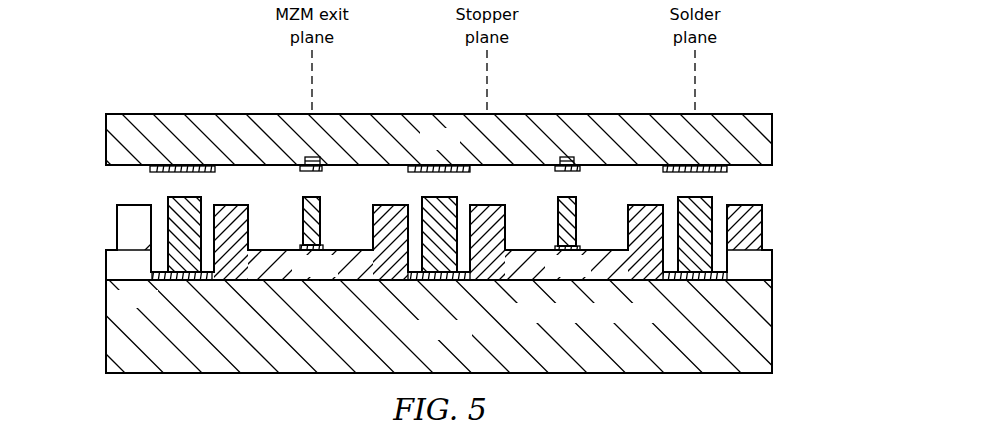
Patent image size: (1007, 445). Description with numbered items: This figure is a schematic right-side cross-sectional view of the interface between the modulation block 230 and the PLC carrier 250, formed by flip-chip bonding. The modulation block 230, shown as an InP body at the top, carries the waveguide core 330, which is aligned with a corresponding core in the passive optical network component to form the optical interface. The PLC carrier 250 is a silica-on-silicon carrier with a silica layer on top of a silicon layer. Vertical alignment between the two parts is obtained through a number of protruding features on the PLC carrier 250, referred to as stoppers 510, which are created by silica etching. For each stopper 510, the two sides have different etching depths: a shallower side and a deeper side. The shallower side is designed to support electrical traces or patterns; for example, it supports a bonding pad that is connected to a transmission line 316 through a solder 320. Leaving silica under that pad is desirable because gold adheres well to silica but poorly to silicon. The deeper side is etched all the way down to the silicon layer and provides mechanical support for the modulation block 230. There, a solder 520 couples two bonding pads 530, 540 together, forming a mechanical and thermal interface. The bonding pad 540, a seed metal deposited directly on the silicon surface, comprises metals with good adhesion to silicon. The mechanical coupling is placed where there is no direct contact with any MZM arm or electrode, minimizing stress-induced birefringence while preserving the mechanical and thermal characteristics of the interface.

The modulation block 230 is at (127, 114).
The core 330 is at (316, 156).
The transmission line 316 is at (323, 169).
The bonding pad 530 is at (700, 172).
The stopper 510 is at (117, 222).
The solder 520 is at (170, 196).
The solder 320 is at (302, 206).
The bonding pad 540 is at (183, 281).
The PLC carrier 250 is at (700, 373).